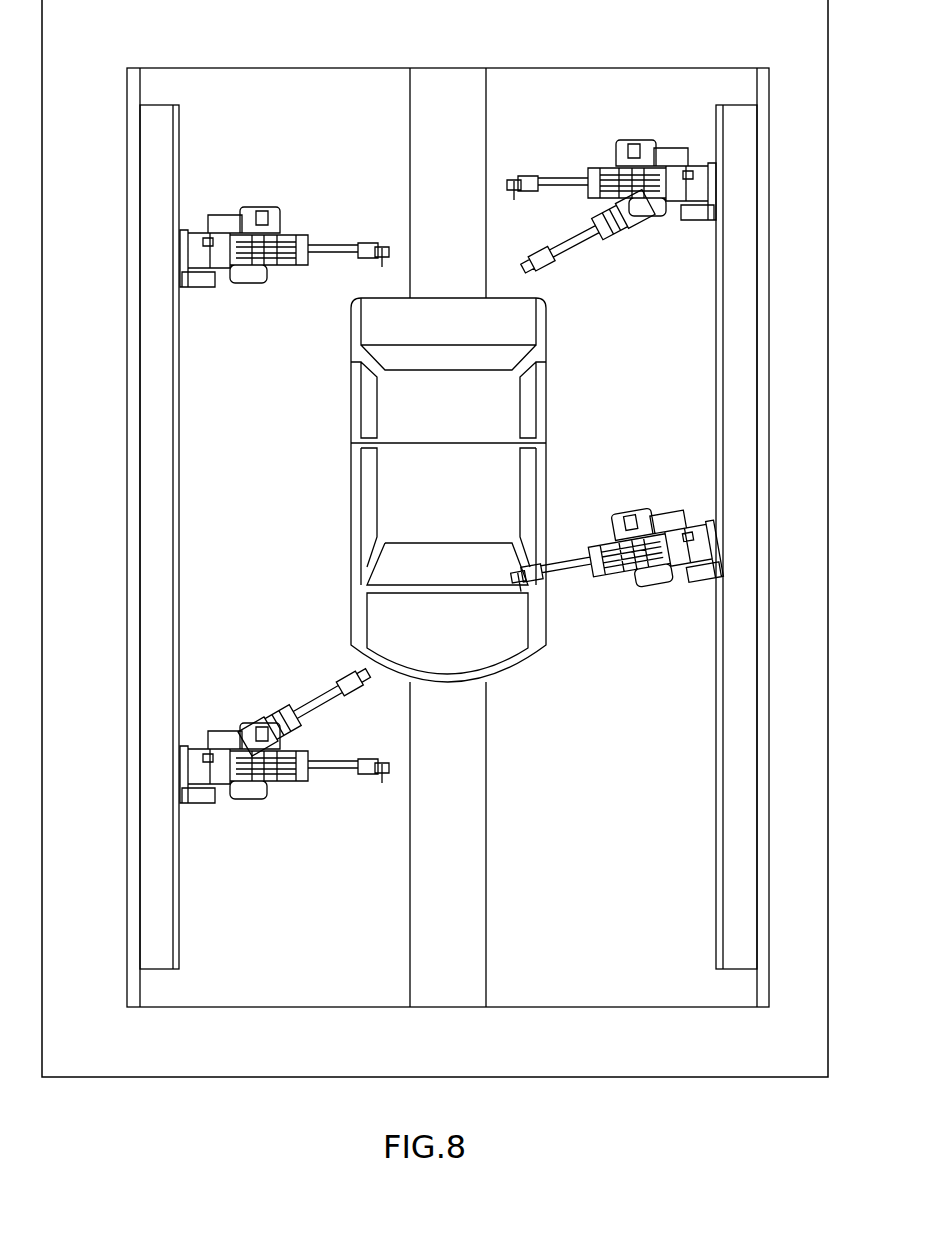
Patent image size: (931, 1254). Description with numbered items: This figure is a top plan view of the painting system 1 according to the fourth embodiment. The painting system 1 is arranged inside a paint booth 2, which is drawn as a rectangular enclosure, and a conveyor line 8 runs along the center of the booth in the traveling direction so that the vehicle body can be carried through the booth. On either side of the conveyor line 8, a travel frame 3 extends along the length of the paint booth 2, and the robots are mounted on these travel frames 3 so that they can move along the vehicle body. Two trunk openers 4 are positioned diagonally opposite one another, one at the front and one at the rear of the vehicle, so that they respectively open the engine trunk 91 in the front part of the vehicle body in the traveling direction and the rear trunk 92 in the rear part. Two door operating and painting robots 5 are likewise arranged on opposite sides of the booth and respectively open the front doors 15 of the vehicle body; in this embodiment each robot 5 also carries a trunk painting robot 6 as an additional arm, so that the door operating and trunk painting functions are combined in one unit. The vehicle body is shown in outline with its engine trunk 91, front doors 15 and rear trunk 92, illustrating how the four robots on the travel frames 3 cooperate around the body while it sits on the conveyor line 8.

The painting system 1 is at (568, 99).
The paint booth 2 is at (767, 108).
The travel frame 3 is at (147, 650).
The trunk opener 4 is at (200, 247).
The door operating and painting/trunk painting robot 5 is at (695, 178).
The trunk painting robot 6 is at (586, 246).
The conveyor line 8 is at (470, 860).
The front door 15 is at (355, 483).
The engine trunk 91 is at (446, 640).
The rear trunk 92 is at (455, 315).